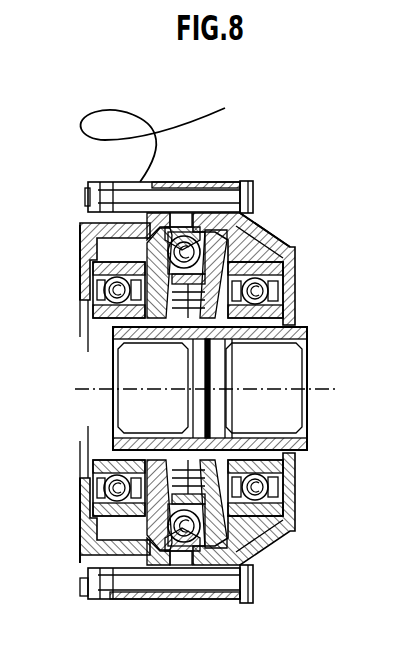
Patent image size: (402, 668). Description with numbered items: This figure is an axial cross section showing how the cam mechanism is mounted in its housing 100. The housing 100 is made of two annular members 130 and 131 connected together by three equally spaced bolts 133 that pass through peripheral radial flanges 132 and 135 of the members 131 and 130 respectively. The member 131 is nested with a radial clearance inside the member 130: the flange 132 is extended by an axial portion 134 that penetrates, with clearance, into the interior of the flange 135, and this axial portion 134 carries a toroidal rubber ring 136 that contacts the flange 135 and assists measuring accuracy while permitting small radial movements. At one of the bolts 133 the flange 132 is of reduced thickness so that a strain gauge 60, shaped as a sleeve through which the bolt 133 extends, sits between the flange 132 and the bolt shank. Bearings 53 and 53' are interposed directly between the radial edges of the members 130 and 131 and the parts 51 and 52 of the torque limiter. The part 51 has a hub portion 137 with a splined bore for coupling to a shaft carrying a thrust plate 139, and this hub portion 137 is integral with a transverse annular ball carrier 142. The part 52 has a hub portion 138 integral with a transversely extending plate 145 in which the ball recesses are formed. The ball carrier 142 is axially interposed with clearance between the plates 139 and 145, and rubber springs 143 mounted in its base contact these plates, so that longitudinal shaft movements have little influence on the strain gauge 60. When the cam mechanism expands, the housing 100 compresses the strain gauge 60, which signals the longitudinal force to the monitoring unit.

The strain gauge 60 is at (125, 182).
The cam mechanism housing 100 is at (262, 170).
The annular member 130 is at (282, 236).
The annular member 131 is at (76, 253).
The radial flange 132 is at (120, 598).
The bolt 133 is at (252, 196).
The axial portion 134 is at (190, 208).
The radial flange 135 is at (222, 598).
The toroidal rubber ring 136 is at (155, 213).
The hub portion 137 is at (128, 436).
The hub portion 138 is at (280, 445).
The thrust plate 139 is at (98, 532).
The ball carrier 142 is at (202, 210).
The rubber springs 143 is at (185, 334).
The plate 145 is at (270, 240).
The part of the torque limiter 51 is at (102, 336).
The part of the torque limiter 52 is at (307, 343).
The bearing 53 is at (91, 482).
The bearing 53' is at (300, 479).